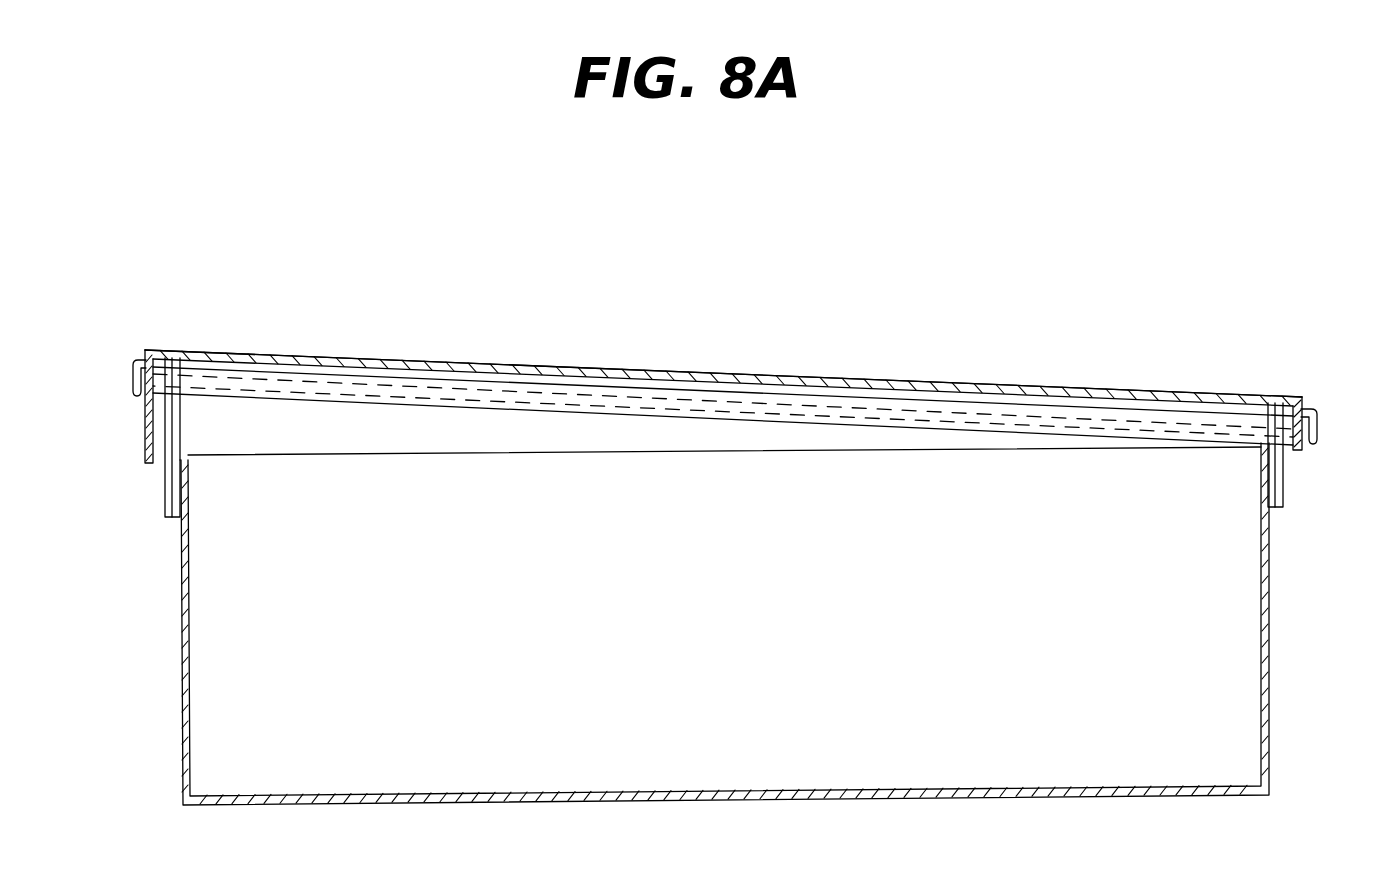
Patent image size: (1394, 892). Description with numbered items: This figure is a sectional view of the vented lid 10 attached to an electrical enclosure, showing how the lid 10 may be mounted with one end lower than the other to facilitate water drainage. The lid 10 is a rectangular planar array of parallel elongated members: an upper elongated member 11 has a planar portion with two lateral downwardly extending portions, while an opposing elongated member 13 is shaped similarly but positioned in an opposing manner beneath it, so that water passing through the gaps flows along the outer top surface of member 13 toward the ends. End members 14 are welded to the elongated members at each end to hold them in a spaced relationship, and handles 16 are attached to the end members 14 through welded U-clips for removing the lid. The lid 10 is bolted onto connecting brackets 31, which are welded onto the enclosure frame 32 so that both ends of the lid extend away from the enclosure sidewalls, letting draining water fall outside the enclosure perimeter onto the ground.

The lid 10 is at (326, 349).
The elongated member 11 is at (212, 348).
The elongated member 13 is at (262, 395).
The end member 14 is at (152, 349).
The handle 16 is at (132, 382).
The connecting bracket 31 is at (167, 500).
The enclosure frame 32 is at (183, 647).